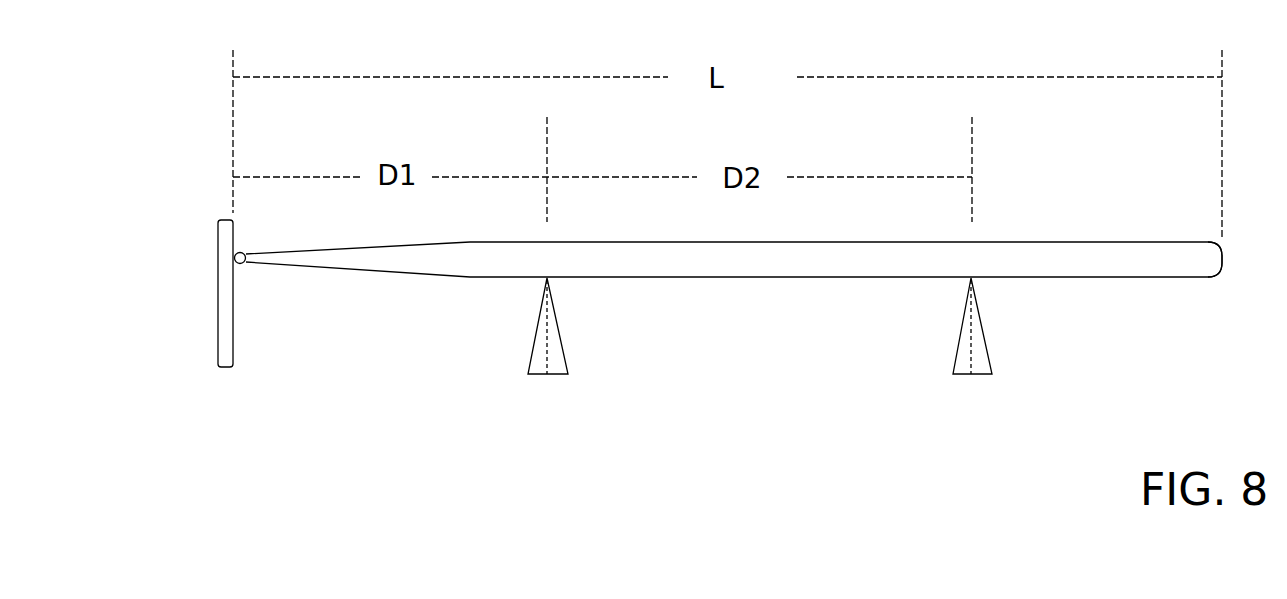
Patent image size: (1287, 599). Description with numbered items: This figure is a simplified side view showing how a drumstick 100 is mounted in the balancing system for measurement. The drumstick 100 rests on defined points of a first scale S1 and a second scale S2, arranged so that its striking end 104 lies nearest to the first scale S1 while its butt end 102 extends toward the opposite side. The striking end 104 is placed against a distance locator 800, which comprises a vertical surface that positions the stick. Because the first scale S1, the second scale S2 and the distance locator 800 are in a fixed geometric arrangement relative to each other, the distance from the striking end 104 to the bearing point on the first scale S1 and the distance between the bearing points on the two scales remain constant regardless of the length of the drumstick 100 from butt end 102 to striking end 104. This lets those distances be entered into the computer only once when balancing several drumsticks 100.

The distance locator 800 is at (216, 278).
The drumstick 100 is at (1121, 243).
The striking end 104 is at (242, 266).
The butt end 102 is at (1224, 266).
The first scale S1 is at (560, 324).
The second scale S2 is at (962, 334).